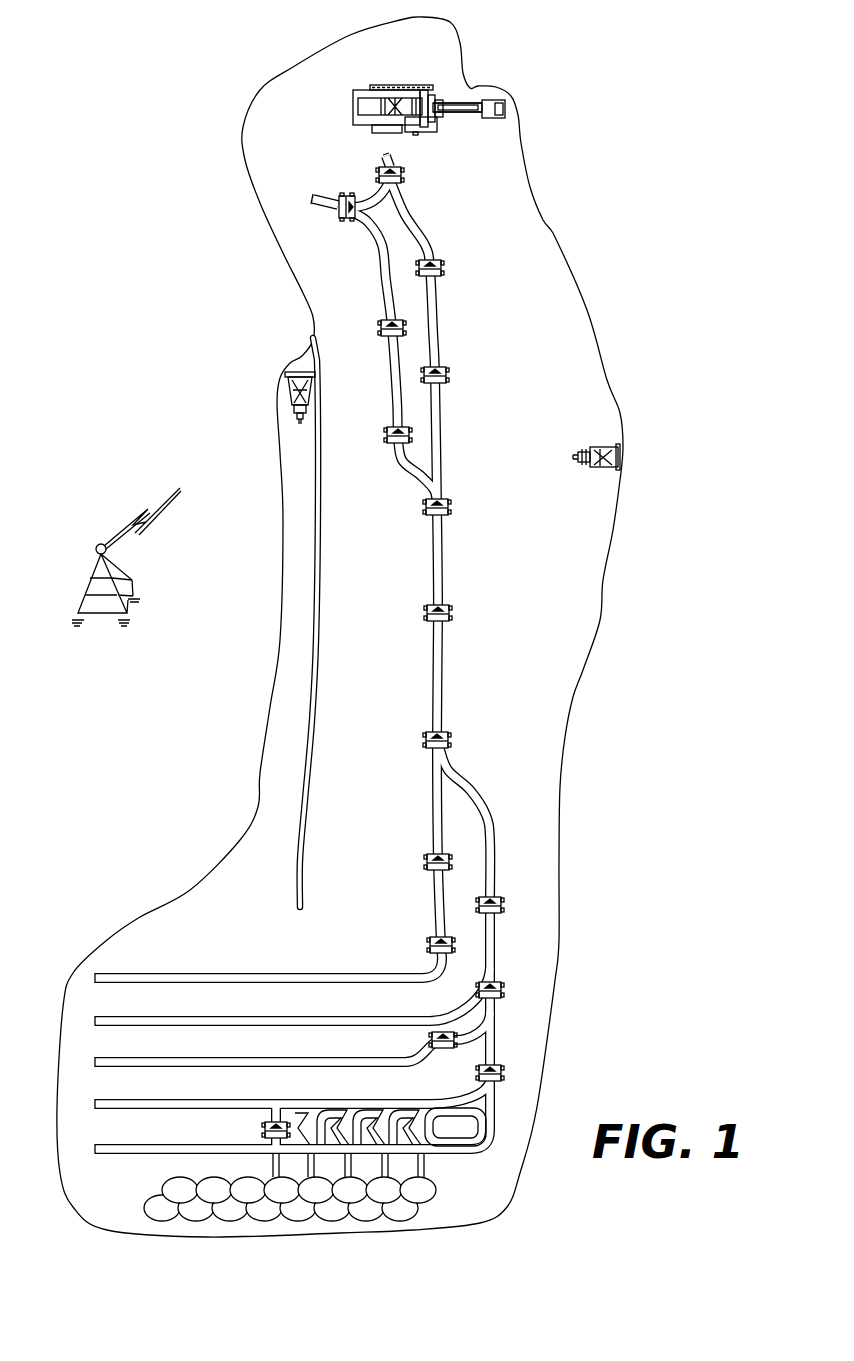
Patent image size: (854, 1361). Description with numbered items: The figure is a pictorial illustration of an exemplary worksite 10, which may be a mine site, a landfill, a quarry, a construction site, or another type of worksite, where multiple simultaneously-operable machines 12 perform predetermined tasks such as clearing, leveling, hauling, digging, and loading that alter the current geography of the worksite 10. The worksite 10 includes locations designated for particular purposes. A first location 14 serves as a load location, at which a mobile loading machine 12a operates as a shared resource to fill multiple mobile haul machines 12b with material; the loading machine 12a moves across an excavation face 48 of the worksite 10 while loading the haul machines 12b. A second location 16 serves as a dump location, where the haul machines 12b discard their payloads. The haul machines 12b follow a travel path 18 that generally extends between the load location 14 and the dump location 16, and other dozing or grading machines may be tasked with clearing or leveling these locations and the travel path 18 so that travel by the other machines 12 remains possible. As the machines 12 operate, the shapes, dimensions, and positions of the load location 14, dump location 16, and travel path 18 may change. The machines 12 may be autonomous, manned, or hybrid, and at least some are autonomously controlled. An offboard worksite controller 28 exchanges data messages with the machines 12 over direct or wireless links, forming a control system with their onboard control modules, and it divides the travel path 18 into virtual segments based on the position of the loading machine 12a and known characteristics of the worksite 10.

The worksite 10 is at (686, 1029).
The machines 12 is at (543, 418).
The mobile loading machine 12a is at (360, 80).
The mobile haul machines 12b is at (451, 507).
The first location 14 is at (319, 127).
The second location 16 is at (490, 1194).
The travel path 18 is at (440, 668).
The offboard worksite controller 28 is at (97, 553).
The excavation face 48 is at (463, 126).